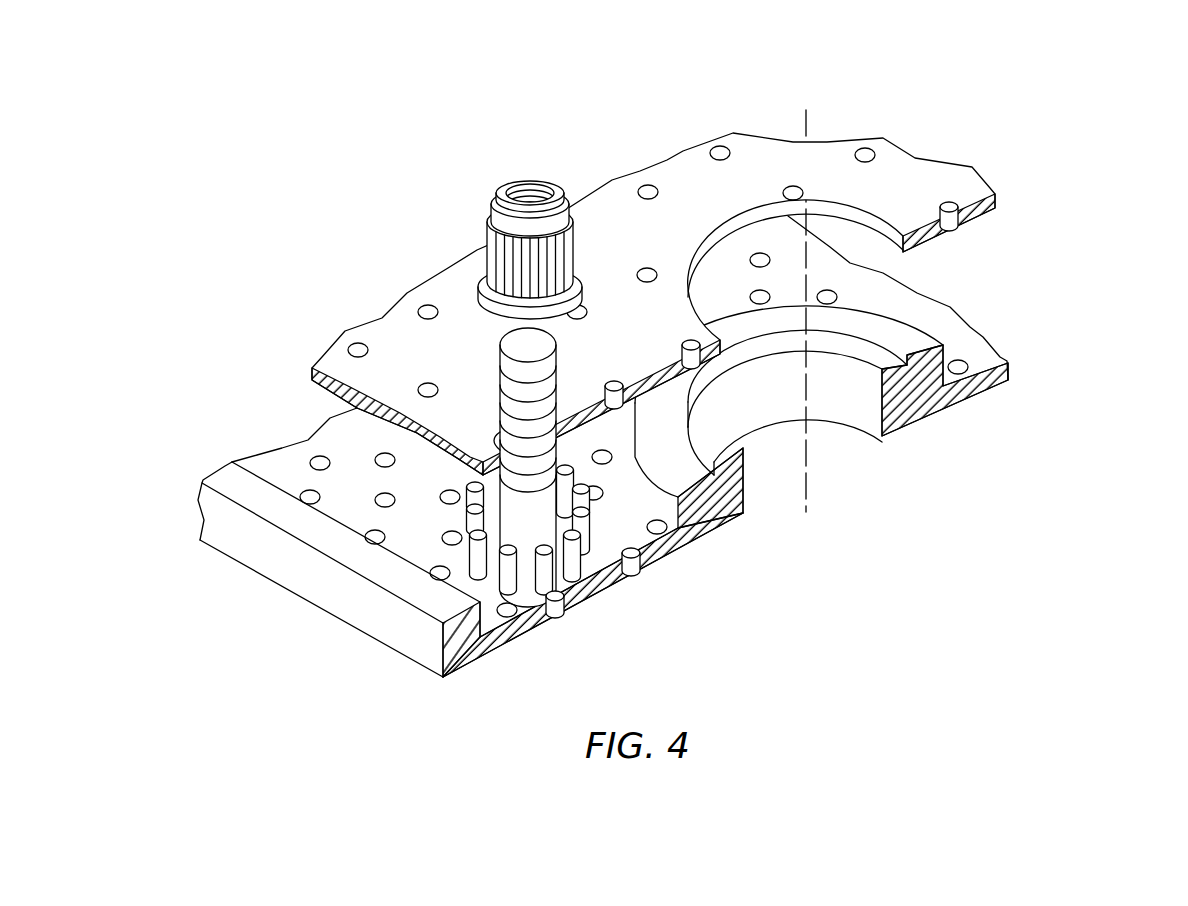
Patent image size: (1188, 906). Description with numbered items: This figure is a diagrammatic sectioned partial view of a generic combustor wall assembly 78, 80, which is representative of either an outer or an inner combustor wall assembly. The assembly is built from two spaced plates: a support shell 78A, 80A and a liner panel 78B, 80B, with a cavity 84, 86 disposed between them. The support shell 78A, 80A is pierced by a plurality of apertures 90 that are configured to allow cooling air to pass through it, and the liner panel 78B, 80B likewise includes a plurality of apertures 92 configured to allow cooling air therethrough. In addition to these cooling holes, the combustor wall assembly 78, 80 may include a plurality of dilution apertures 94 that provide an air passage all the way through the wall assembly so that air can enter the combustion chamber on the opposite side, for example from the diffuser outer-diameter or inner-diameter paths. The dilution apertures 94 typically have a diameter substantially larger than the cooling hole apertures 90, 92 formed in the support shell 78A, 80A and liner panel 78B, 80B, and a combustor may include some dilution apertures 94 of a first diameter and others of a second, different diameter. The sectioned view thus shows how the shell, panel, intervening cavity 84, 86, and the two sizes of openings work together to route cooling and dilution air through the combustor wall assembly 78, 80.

The outer combustor wall assembly 78 is at (745, 295).
The inner combustor wall assembly 80 is at (745, 295).
The support shell 78A is at (686, 268).
The support shell 80A is at (686, 268).
The liner panel 78B is at (897, 319).
The liner panel 80B is at (897, 319).
The cavity 84 is at (477, 503).
The cavity 86 is at (477, 503).
The apertures 90 is at (651, 185).
The apertures 92 is at (383, 502).
The dilution apertures 94 is at (822, 438).